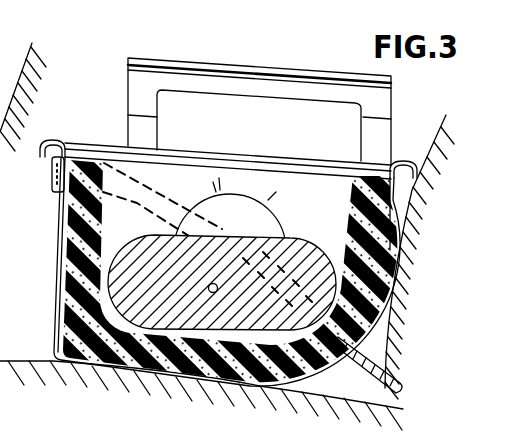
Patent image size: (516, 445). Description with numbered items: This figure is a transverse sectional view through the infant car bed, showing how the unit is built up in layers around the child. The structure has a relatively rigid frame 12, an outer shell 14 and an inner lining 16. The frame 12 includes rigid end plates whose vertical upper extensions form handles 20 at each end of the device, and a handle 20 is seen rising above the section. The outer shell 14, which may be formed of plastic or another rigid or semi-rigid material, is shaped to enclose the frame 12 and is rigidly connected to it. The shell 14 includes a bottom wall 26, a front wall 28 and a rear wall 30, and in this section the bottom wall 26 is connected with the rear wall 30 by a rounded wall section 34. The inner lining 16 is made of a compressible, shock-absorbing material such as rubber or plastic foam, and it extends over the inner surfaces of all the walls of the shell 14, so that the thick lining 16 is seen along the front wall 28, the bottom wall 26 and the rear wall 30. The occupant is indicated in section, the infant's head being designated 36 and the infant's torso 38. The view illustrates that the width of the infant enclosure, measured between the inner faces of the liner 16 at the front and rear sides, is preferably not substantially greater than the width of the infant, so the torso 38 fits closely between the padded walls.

The frame 12 is at (25, 61).
The outer shell 14 is at (55, 258).
The inner lining 16 is at (105, 227).
The handle 20 is at (325, 90).
The bottom wall 26 is at (219, 387).
The front wall 28 is at (61, 223).
The rear wall 30 is at (404, 200).
The rounded wall section 34 is at (323, 361).
The infant's head 36 is at (242, 196).
The infant's torso 38 is at (331, 246).